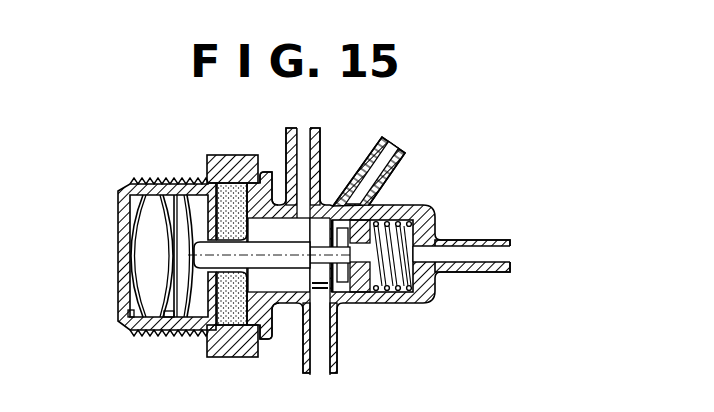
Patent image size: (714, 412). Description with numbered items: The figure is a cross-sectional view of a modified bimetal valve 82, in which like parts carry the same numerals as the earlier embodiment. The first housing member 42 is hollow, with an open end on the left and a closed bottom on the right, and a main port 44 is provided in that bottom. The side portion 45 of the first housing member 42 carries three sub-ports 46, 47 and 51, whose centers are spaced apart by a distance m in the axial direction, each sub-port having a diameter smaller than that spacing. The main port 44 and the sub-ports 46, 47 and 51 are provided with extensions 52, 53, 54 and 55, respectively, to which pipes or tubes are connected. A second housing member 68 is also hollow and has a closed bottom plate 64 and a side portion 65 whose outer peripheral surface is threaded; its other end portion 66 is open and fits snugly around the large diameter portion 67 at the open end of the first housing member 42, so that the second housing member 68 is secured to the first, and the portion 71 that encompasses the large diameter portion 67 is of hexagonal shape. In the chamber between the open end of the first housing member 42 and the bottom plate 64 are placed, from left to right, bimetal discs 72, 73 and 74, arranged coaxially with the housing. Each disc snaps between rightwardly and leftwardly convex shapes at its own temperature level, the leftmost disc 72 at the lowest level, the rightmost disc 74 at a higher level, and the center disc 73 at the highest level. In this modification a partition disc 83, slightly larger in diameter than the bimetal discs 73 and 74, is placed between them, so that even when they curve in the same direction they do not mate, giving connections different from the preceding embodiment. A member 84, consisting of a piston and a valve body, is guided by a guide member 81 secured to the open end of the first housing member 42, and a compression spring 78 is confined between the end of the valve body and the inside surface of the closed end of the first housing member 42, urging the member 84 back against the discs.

The first housing member 42 is at (436, 208).
The main port 44 is at (437, 273).
The side portion 45 is at (325, 203).
The sub-port 46 is at (366, 202).
The sub-port 47 is at (320, 310).
The sub-port 51 is at (300, 210).
The extension 52 is at (492, 262).
The extension 53 is at (383, 133).
The extension 54 is at (335, 357).
The extension 55 is at (317, 136).
The bottom plate 64 is at (128, 280).
The side portion 65 is at (190, 338).
The other end portion 66 is at (267, 306).
The large diameter portion 67 is at (228, 195).
The second housing member 68 is at (119, 189).
The hexagonal portion 71 is at (229, 345).
The bimetal disc 72 is at (136, 212).
The bimetal disc 73 is at (140, 178).
The bimetal disc 74 is at (188, 178).
The compression spring 78 is at (398, 297).
The guide member 81 is at (214, 176).
The bimetal valve 82 is at (478, 137).
The lens spacer 83 is at (168, 306).
The member 84 is at (290, 262).